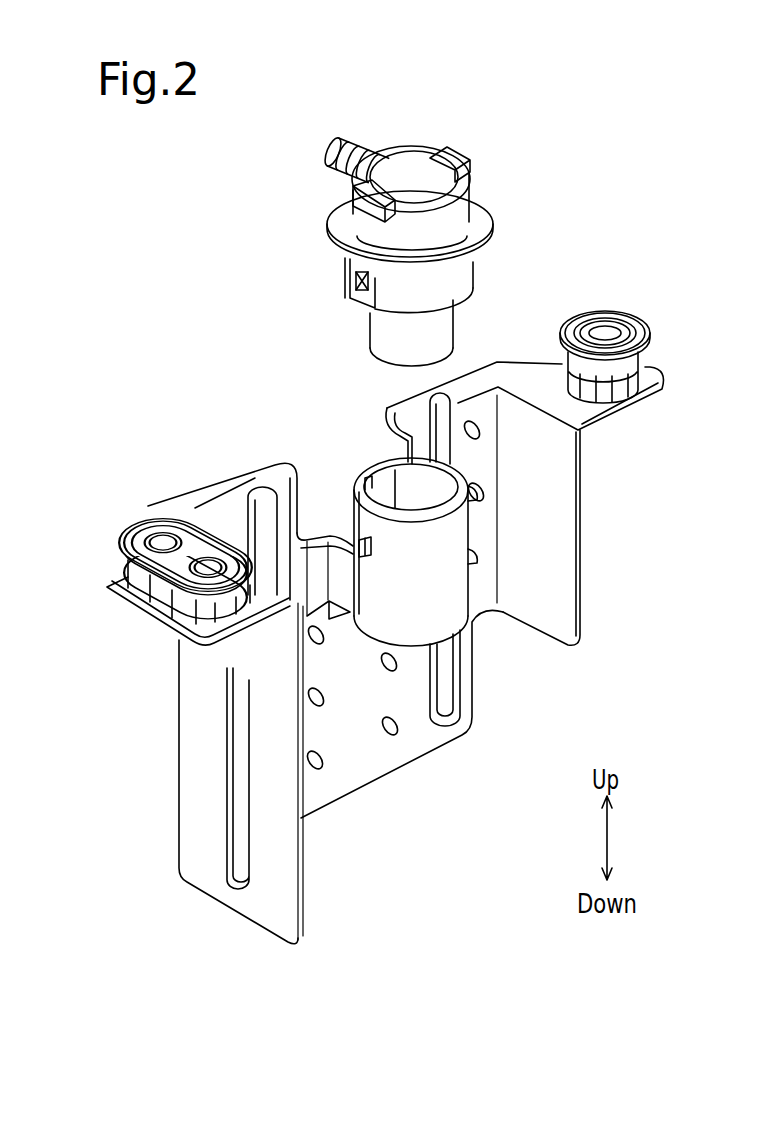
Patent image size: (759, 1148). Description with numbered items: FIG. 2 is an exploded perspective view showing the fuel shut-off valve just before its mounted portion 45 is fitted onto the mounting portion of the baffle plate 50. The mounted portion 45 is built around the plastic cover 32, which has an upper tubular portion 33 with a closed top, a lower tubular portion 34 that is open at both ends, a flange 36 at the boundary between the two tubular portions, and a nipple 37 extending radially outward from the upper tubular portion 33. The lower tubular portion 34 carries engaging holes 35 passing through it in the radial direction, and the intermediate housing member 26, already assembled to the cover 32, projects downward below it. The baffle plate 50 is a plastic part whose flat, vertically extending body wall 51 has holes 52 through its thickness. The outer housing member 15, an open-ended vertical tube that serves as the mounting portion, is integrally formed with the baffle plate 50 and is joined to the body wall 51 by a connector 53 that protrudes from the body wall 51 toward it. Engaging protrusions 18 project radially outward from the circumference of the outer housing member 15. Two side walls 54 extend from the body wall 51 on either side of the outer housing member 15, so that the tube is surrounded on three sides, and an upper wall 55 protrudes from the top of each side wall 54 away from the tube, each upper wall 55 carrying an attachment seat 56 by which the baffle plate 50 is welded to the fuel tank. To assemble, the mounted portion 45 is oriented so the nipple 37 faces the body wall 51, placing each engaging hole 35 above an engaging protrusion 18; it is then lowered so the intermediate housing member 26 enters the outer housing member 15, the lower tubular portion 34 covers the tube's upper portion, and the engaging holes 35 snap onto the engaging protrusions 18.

The mounted portion 45 is at (301, 219).
The upper tubular portion 33 is at (404, 158).
The cover 32 is at (414, 172).
The nipple 37 is at (328, 153).
The flange 36 is at (486, 217).
The lower tubular portion 34 is at (472, 267).
The engaging hole 35 is at (352, 295).
The intermediate housing member 26 is at (370, 333).
The baffle plate 50 is at (419, 871).
The body wall 51 is at (378, 762).
The holes 52 is at (482, 495).
The connector 53 is at (413, 562).
The outer housing member 15 is at (457, 606).
The engaging protrusion 18 is at (363, 540).
The side walls 54 is at (571, 511).
The upper wall 55 is at (553, 367).
The attachment seat 56 is at (580, 327).